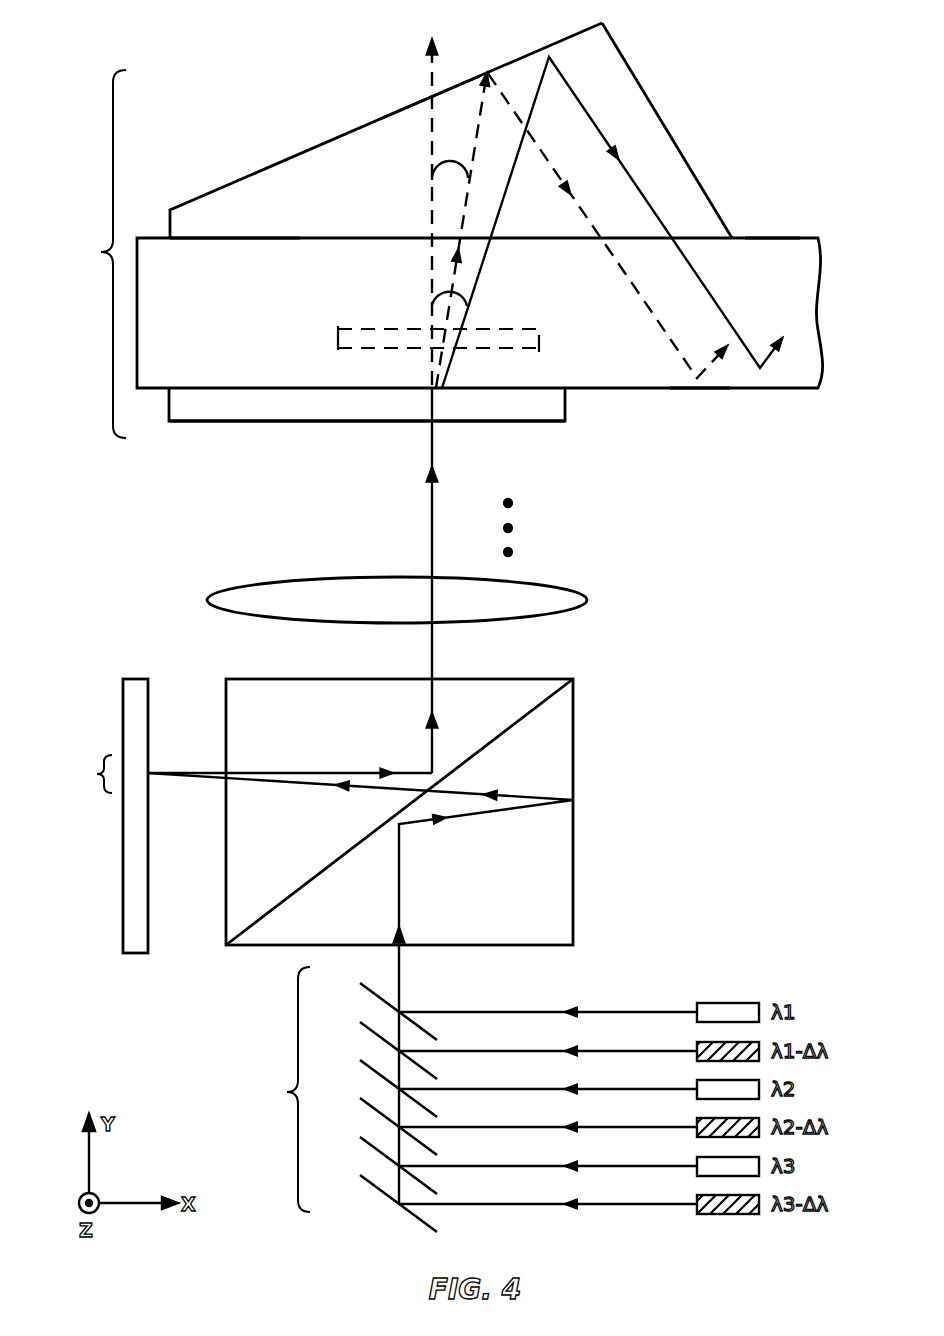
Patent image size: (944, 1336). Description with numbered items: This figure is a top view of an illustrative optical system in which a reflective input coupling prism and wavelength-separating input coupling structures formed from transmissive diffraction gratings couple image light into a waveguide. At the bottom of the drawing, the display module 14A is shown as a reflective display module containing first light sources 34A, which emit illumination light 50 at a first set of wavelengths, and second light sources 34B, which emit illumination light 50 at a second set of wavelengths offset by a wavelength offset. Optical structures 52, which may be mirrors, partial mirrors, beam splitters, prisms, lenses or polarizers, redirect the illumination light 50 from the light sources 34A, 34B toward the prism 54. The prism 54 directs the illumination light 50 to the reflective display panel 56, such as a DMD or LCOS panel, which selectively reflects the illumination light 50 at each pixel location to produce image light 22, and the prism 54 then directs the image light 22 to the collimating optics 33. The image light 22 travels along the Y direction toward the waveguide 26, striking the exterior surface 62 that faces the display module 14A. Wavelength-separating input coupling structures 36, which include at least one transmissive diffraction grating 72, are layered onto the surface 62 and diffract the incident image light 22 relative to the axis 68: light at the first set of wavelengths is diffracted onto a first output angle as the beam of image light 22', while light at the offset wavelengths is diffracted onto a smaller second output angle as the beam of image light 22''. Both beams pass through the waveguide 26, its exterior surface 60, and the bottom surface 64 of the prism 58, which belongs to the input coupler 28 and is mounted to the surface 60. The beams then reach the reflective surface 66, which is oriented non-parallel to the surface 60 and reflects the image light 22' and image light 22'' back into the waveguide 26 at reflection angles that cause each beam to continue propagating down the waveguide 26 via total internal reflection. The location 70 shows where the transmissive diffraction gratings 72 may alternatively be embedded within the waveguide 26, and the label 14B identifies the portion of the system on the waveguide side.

The display module 14A is at (780, 648).
The sensing module 14B is at (768, 89).
The image light 22 is at (293, 583).
The image light 22' is at (612, 222).
The image light 22'' is at (553, 230).
The waveguide 26 is at (753, 240).
The input coupler 28 is at (99, 254).
The collimating optics 33 is at (588, 598).
The first light sources 34A is at (697, 1022).
The second light sources 34B is at (697, 1051).
The wavelength-separating input coupling structures 36 is at (568, 410).
The illumination light 50 is at (399, 880).
The optical structures 52 is at (347, 1099).
The prism 54 is at (573, 863).
The reflective display panel 56 is at (130, 935).
The prism 58 is at (655, 122).
The exterior surface 60 is at (775, 241).
The exterior surface 62 is at (697, 390).
The bottom surface 64 is at (232, 237).
The reflective surface 66 is at (222, 187).
The axis 68 is at (432, 78).
The location 70 is at (338, 337).
The transmissive diffraction grating 72 is at (222, 425).